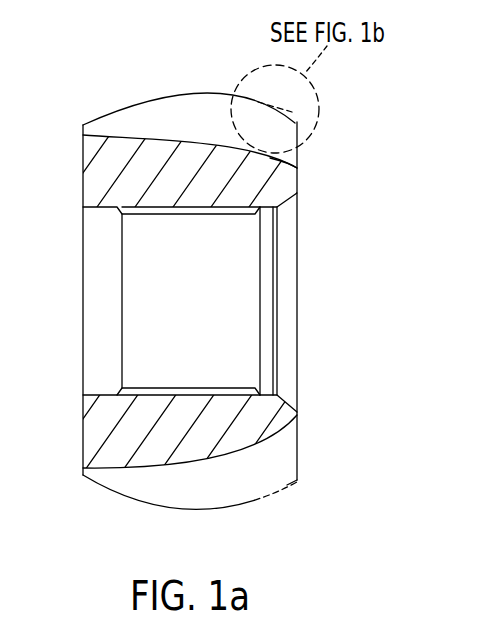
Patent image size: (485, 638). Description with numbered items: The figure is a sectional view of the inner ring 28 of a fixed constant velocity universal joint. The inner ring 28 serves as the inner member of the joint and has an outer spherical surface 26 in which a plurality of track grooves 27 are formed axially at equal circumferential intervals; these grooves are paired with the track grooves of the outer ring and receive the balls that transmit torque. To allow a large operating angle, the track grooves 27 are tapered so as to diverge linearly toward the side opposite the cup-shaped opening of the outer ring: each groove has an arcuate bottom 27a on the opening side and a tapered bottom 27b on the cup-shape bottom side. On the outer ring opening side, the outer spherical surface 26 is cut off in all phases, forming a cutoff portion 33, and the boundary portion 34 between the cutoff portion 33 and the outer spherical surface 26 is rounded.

The outer spherical surface 26 is at (113, 492).
The track grooves 27 is at (181, 468).
The arcuate bottoms 27a is at (297, 166).
The tapered bottoms 27b is at (138, 137).
The inner ring 28 is at (76, 444).
The cutoff portion 33 is at (292, 113).
The boundary portion 34 is at (258, 103).